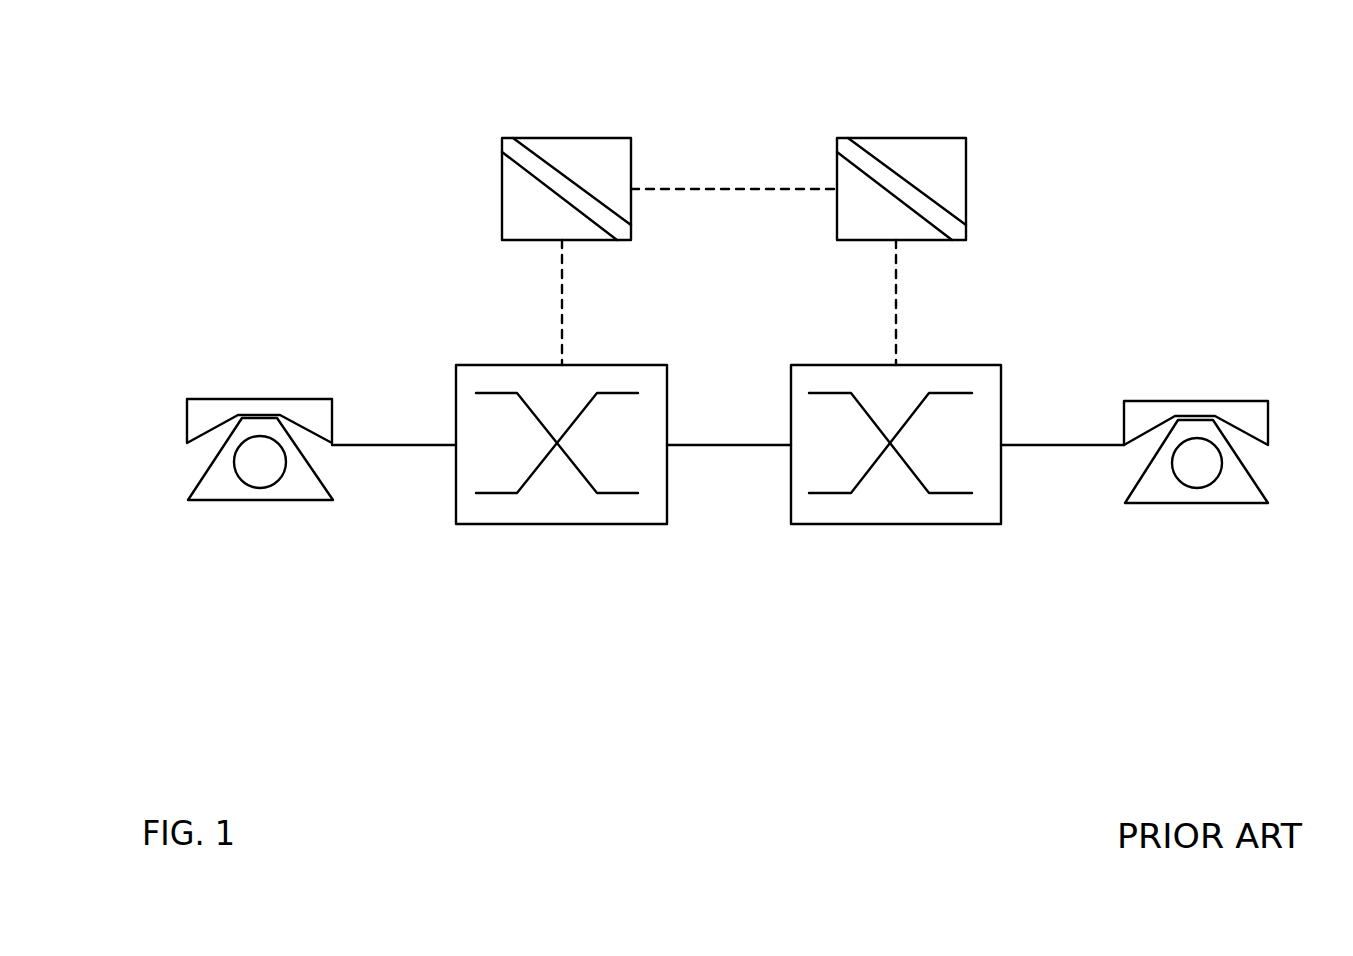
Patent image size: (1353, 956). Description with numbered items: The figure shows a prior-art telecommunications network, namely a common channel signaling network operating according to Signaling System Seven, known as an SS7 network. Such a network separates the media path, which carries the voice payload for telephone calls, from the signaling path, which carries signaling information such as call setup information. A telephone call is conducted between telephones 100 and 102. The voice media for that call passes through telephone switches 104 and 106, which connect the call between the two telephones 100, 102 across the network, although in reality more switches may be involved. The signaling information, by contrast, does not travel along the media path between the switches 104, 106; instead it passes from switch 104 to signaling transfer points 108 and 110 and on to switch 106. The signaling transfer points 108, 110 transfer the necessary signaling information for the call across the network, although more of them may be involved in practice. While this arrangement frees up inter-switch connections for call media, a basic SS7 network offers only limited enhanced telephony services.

The telephone 100 is at (249, 493).
The telephone 102 is at (1203, 490).
The telephone switch 104 is at (561, 494).
The telephone switch 106 is at (896, 494).
The signaling transfer point 108 is at (563, 142).
The signaling transfer point 110 is at (901, 136).